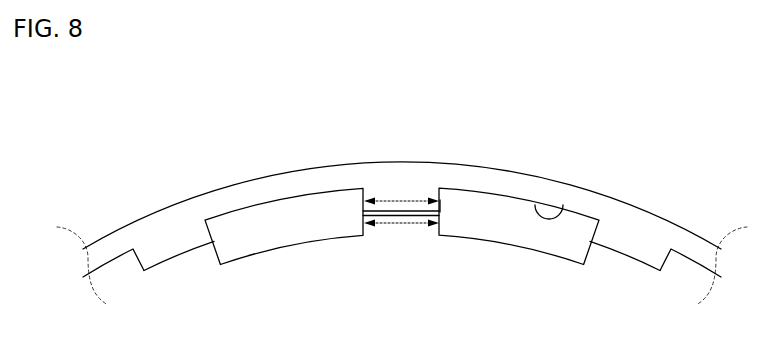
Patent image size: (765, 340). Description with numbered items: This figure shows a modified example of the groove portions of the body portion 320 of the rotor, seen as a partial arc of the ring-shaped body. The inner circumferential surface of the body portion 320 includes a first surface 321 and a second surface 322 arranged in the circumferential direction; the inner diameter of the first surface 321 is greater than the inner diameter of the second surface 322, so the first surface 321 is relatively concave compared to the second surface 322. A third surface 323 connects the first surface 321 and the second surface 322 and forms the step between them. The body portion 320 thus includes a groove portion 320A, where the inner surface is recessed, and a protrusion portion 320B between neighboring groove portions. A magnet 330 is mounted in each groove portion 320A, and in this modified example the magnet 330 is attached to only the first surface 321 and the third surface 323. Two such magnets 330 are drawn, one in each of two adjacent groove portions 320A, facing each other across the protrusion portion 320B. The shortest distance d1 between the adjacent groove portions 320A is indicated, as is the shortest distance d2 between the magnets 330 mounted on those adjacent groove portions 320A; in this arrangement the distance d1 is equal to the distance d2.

The body portion 320 is at (139, 218).
The groove portion 320A is at (283, 197).
The protrusion portion 320B is at (372, 190).
The first surface 321 is at (563, 205).
The second surface 322 is at (626, 260).
The third surface 323 is at (441, 199).
The magnet 330 is at (247, 243).
The shortest distance between adjacent groove portions d1 is at (405, 196).
The shortest distance between magnets d2 is at (400, 230).